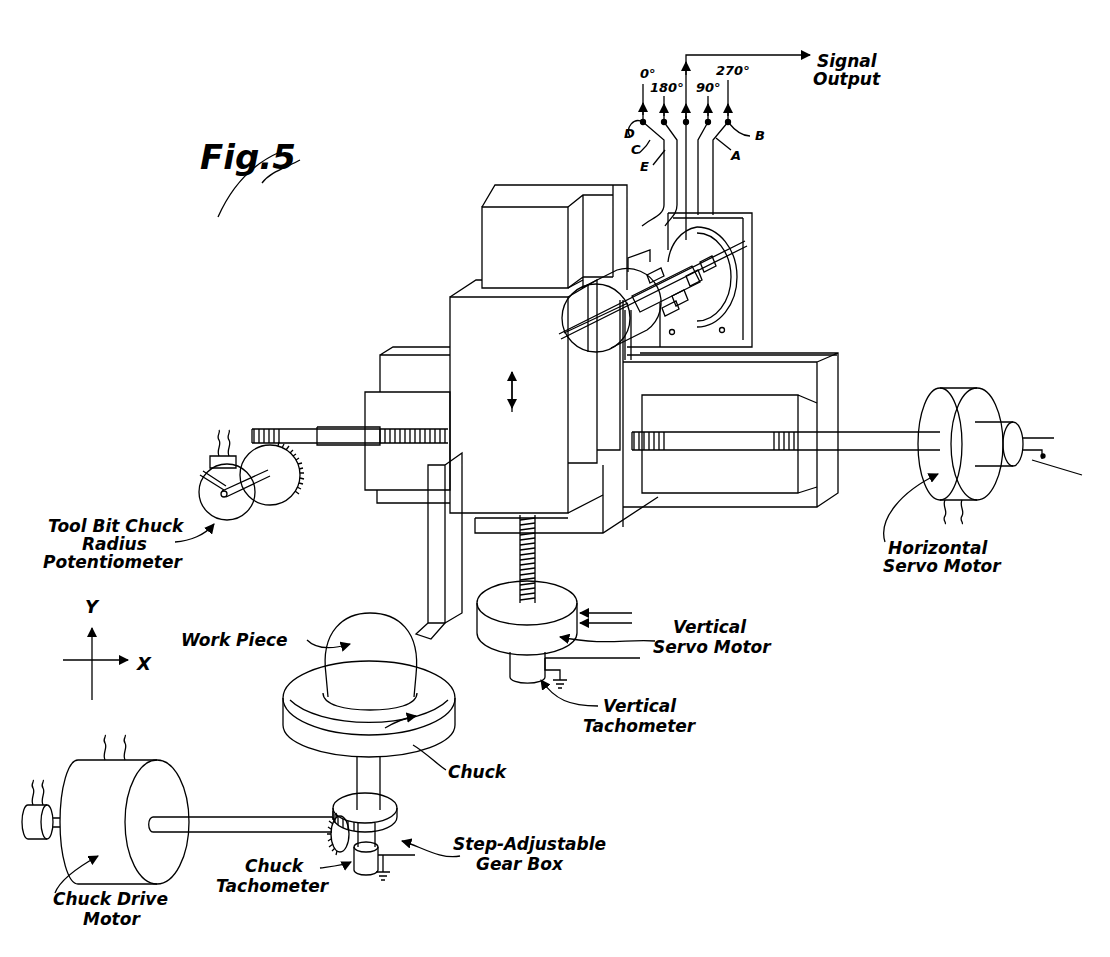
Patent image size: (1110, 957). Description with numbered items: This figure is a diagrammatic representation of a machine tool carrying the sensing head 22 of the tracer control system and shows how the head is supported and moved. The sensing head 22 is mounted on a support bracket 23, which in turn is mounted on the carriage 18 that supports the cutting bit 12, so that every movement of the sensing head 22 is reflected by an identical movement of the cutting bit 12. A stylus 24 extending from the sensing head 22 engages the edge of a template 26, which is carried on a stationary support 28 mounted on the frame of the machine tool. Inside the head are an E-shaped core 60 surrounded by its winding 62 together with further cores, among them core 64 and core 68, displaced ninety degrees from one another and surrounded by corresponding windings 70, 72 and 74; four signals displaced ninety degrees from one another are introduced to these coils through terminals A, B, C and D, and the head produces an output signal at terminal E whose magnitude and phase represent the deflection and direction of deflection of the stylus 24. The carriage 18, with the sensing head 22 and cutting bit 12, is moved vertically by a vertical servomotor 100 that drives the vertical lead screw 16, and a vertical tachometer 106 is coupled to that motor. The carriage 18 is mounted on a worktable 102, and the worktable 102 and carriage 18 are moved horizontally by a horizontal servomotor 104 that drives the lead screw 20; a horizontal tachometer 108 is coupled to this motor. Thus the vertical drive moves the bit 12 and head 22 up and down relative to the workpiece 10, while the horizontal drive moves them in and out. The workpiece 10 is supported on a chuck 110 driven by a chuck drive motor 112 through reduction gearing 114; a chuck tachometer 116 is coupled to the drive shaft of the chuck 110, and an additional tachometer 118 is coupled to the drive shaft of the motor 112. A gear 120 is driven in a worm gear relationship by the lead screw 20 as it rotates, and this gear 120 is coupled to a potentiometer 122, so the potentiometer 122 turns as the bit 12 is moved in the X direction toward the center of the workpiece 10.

The workpiece 10 is at (359, 626).
The cutting bit 12 is at (436, 636).
The vertical lead screw 16 is at (538, 554).
The carriage 18 is at (480, 497).
The lead screw 20 is at (278, 428).
The sensing head 22 is at (612, 352).
The support bracket 23 is at (585, 433).
The stylus 24 is at (740, 237).
The template 26 is at (727, 292).
The stationary support 28 is at (742, 330).
The E-shaped core 60 is at (652, 252).
The winding 62 is at (660, 268).
The core 64 is at (706, 322).
The core 68 is at (578, 322).
The winding 70 is at (683, 330).
The winding 72 is at (675, 318).
The winding 74 is at (627, 272).
The vertical servomotor 100 is at (562, 600).
The worktable 102 is at (625, 503).
The horizontal servomotor 104 is at (982, 484).
The vertical tachometer 106 is at (521, 670).
The horizontal tachometer 108 is at (990, 430).
The chuck 110 is at (305, 732).
The chuck drive motor 112 is at (123, 778).
The reduction gearing 114 is at (392, 828).
The chuck tachometer 116 is at (359, 871).
The tachometer 118 is at (35, 836).
The gear 120 is at (282, 488).
The potentiometer 122 is at (240, 519).